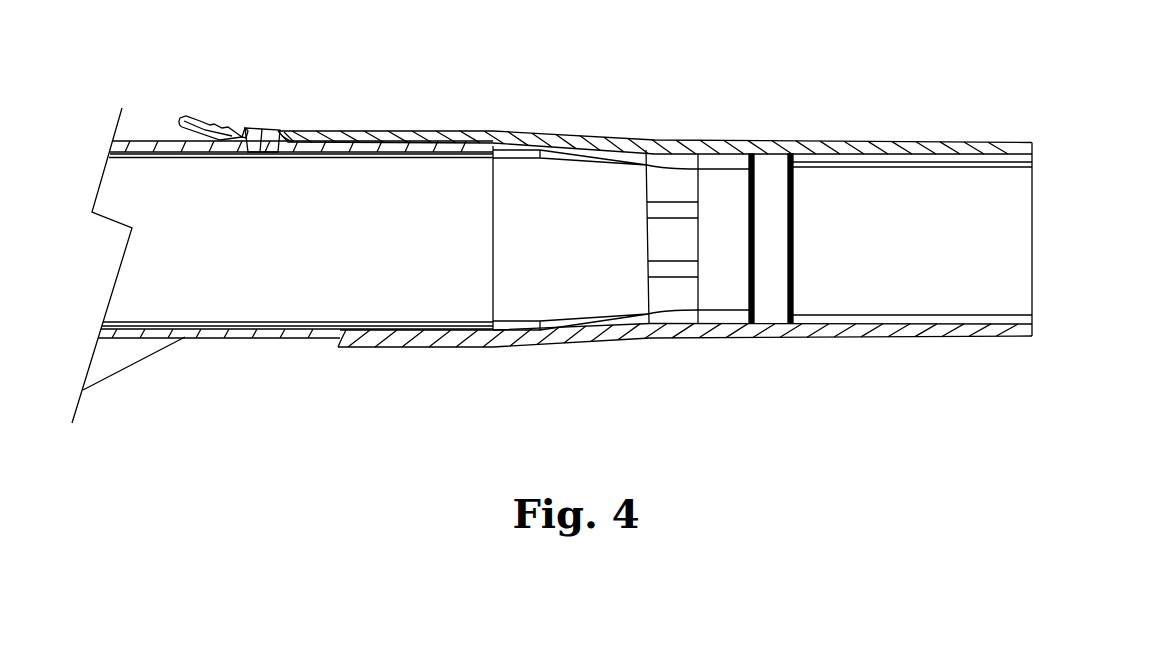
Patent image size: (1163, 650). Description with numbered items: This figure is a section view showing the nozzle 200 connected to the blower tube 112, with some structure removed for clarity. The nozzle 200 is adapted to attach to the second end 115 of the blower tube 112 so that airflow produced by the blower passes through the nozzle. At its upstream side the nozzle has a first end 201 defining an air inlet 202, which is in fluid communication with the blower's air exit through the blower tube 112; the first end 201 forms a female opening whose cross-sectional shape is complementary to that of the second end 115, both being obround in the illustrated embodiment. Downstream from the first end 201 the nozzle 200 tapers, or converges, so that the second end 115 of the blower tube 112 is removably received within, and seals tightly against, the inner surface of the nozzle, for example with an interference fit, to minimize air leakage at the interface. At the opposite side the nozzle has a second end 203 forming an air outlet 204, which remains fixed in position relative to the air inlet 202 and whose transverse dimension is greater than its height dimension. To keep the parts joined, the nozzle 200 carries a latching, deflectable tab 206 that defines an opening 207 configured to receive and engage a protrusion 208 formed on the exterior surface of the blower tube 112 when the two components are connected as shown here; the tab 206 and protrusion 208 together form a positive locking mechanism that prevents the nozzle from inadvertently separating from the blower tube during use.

The blower tube 112 is at (228, 340).
The second end of the blower tube 115 is at (495, 284).
The nozzle 200 is at (662, 128).
The first end 201 is at (338, 349).
The air inlet 202 is at (373, 178).
The second end 203 is at (1032, 140).
The air outlet 204 is at (1018, 266).
The deflectable tab 206 is at (222, 123).
The opening 207 is at (279, 126).
The protrusion 208 is at (246, 126).